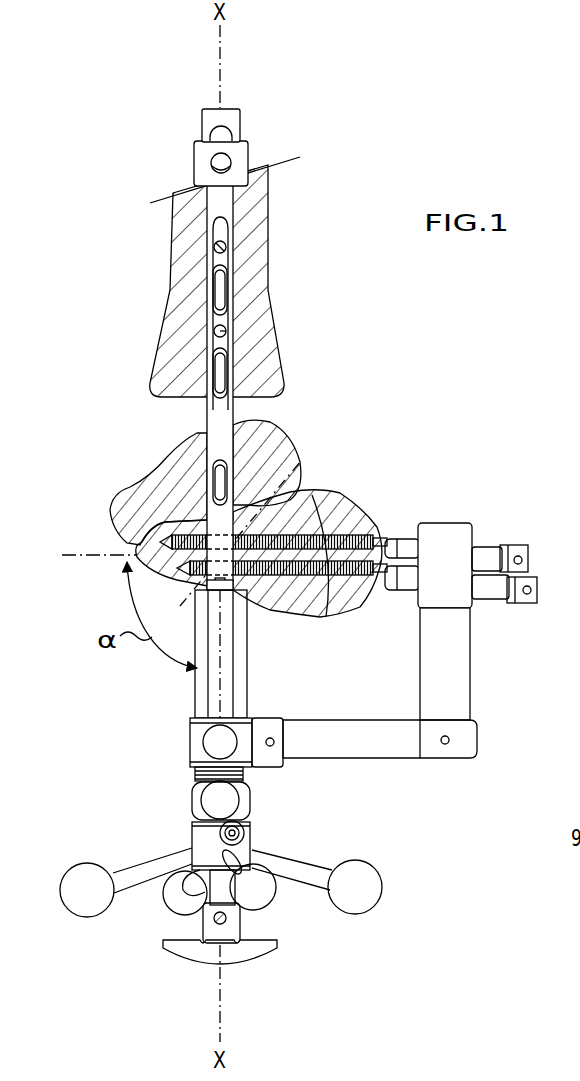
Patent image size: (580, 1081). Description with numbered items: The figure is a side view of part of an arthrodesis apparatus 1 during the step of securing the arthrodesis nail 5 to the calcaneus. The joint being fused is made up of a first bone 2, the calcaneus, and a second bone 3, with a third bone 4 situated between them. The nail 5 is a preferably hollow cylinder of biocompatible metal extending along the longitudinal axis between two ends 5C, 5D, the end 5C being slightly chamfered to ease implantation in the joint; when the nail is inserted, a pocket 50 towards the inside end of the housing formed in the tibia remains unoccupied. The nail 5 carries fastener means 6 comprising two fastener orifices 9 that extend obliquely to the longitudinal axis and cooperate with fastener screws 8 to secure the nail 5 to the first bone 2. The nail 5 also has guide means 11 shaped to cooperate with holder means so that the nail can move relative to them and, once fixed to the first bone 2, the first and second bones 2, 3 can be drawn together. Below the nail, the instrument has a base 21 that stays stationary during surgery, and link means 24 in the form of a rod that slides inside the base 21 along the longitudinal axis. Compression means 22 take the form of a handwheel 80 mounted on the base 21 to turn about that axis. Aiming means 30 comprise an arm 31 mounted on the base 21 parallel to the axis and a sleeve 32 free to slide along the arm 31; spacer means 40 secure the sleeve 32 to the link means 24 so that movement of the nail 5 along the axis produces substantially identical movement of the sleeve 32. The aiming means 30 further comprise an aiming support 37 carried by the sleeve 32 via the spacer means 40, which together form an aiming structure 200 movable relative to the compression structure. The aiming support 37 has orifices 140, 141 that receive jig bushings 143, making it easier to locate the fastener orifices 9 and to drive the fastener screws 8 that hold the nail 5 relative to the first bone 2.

The arthrodesis apparatus 1 is at (452, 462).
The first bone 2 is at (318, 500).
The second bone 3 is at (264, 349).
The third bone 4 is at (262, 452).
The arthrodesis nail 5 is at (210, 262).
The end of the nail 5C is at (232, 206).
The end of the nail 5D is at (240, 592).
The fastener means 6 is at (225, 248).
The fastener screw 8 is at (345, 540).
The fastener orifice 9 is at (242, 530).
The guide means 11 is at (220, 298).
The base 21 is at (218, 802).
The compression means 22 is at (245, 852).
The link means 24 is at (210, 684).
The aiming means 30 is at (258, 128).
The arm 31 is at (207, 118).
The sleeve 32 is at (199, 158).
The aiming support 37 is at (452, 646).
The spacer means 40 is at (262, 715).
The pocket 50 is at (213, 197).
The handwheel 80 is at (355, 900).
The orifice 140 is at (407, 538).
The orifice 141 is at (400, 590).
The jig bushing 143 is at (480, 552).
The aiming structure 200 is at (394, 770).